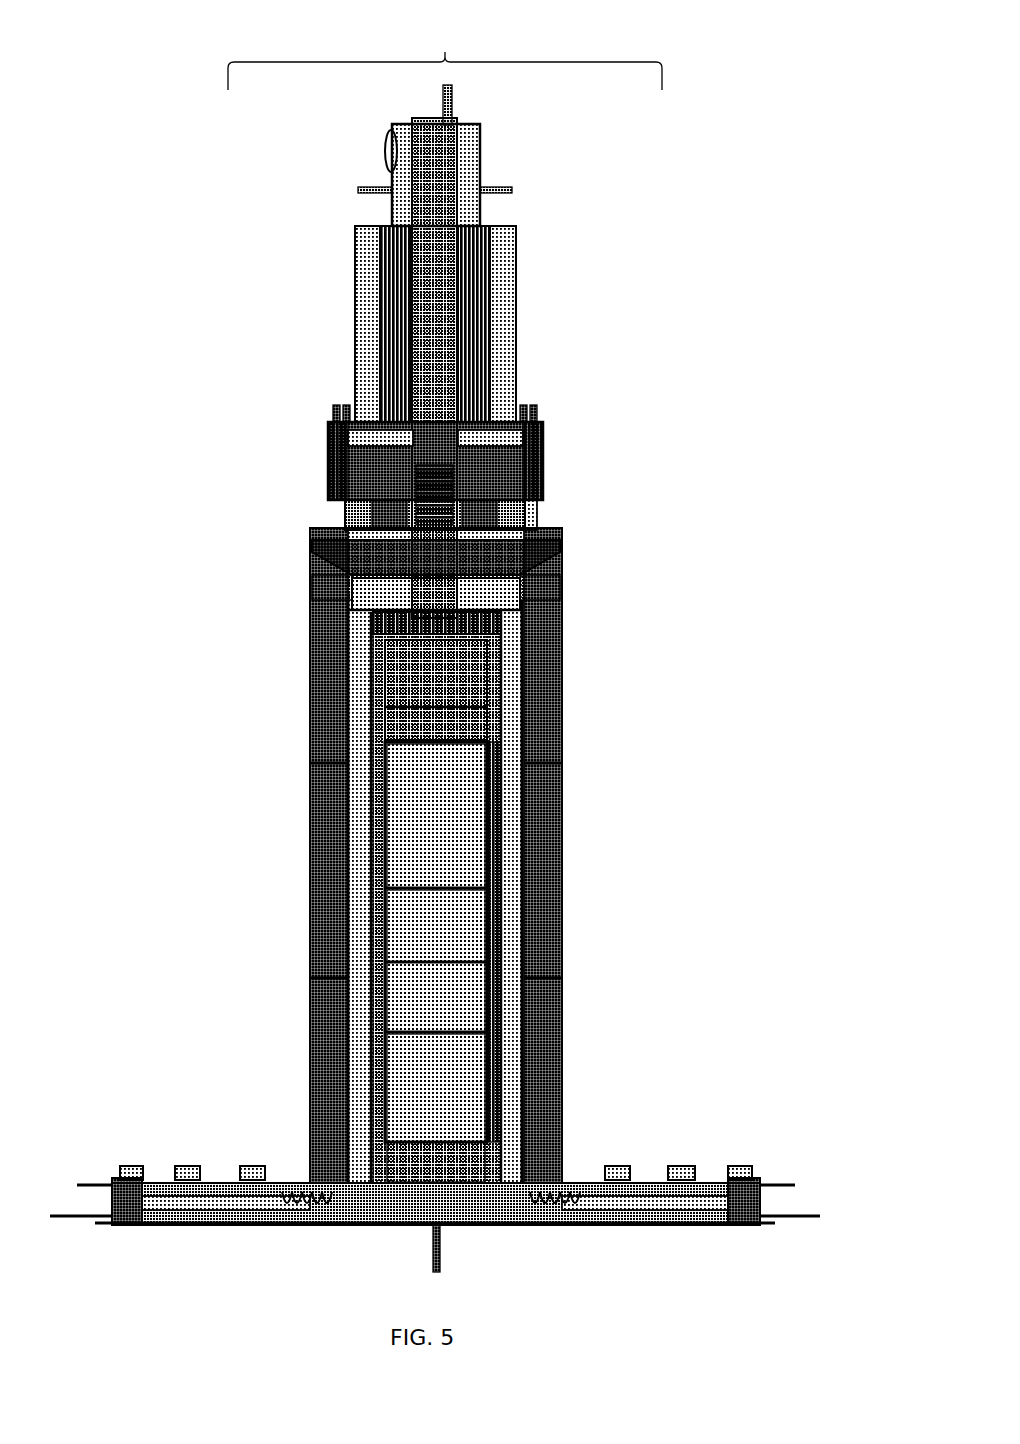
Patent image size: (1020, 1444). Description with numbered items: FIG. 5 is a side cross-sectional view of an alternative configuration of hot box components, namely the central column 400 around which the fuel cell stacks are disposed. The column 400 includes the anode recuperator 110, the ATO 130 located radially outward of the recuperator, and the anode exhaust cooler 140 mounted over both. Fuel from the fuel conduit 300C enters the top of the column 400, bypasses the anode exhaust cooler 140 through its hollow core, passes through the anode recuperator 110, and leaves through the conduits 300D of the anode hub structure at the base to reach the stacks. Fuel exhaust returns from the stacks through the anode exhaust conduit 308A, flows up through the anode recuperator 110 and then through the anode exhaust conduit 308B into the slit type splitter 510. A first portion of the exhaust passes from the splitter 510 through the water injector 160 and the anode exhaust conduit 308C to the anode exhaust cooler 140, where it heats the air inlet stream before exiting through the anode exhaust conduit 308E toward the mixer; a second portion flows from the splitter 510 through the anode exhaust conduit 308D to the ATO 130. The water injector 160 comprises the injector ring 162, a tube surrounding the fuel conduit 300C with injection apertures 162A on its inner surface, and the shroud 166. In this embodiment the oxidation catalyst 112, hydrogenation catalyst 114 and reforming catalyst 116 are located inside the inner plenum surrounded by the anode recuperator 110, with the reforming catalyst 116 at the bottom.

The central column 400 is at (445, 48).
The anode exhaust conduit 308E is at (470, 218).
The anode exhaust cooler 140 is at (515, 305).
The fuel conduit 300C is at (437, 382).
The anode exhaust conduit 308C is at (543, 452).
The water injector 160 is at (388, 537).
The injector ring 162 is at (345, 513).
The shroud 166 is at (320, 548).
The injection apertures 162A is at (560, 537).
The splitter 510 is at (312, 578).
The anode exhaust conduit 308D is at (545, 585).
The anode exhaust conduit 308B is at (520, 620).
The ATO 130 is at (327, 908).
The anode recuperator 110 is at (508, 1008).
The oxidation catalyst 112 is at (458, 792).
The hydrogenation catalyst 114 is at (458, 925).
The reforming catalyst 116 is at (458, 1088).
The conduits 300D is at (168, 1190).
The anode exhaust conduit 308A is at (705, 1200).